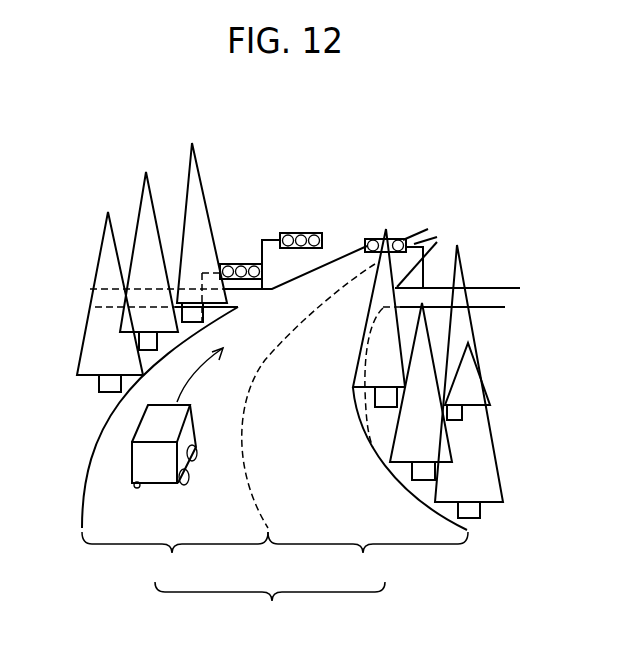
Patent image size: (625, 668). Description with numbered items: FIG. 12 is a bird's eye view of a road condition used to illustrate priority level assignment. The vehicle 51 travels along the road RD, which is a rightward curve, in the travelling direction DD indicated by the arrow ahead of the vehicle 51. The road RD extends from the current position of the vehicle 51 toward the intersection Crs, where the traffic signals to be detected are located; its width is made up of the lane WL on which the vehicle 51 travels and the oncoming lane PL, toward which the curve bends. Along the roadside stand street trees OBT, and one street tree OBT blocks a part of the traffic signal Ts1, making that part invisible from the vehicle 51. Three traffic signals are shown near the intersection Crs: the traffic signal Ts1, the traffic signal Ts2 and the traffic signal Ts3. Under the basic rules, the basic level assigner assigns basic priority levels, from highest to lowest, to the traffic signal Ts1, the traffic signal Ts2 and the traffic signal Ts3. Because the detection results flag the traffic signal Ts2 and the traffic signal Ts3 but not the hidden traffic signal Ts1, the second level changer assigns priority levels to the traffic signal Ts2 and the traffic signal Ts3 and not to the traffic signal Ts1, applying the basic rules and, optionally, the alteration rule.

The street tree OBT is at (90, 292).
The traffic signal Ts1 is at (377, 238).
The traffic signal Ts2 is at (238, 263).
The traffic signal Ts3 is at (303, 233).
The intersection Crs is at (325, 304).
The travelling direction DD is at (198, 375).
The vehicle 51 is at (132, 437).
The own lane WL is at (175, 560).
The oncoming lane PL is at (368, 560).
The road RD is at (270, 608).